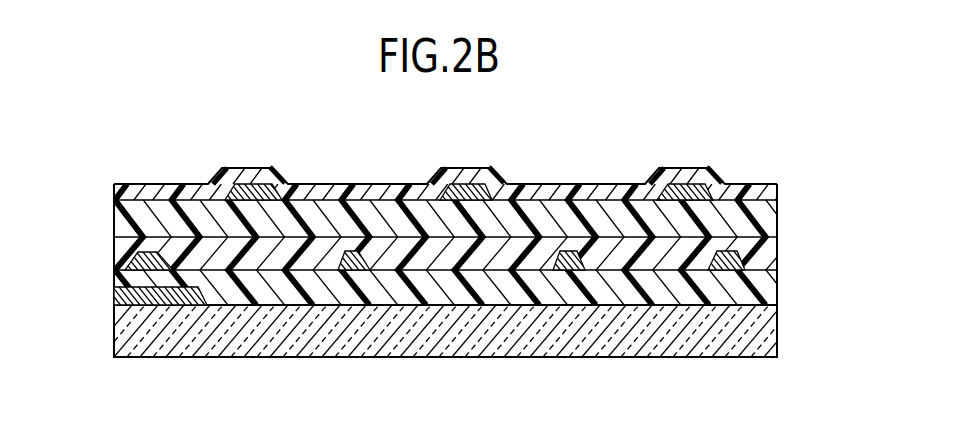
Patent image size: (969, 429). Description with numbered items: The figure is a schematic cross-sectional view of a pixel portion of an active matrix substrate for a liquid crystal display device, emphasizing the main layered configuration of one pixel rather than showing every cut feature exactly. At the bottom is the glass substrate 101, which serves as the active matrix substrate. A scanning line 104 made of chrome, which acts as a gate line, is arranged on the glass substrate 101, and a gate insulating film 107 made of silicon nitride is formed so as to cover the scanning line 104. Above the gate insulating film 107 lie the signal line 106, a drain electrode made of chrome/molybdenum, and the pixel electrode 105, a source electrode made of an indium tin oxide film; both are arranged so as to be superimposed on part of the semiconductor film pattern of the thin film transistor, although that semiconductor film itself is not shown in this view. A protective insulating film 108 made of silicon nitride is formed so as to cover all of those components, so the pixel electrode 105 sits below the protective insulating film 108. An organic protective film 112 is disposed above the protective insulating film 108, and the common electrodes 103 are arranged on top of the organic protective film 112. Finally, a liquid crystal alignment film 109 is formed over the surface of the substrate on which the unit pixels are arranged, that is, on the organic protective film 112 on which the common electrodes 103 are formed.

The glass substrate 101 is at (228, 343).
The common electrode 103 is at (678, 183).
The scanning line 104 is at (114, 308).
The pixel electrode 105 is at (572, 265).
The signal line 106 is at (114, 255).
The gate insulating film 107 is at (768, 292).
The protective insulating film 108 is at (657, 252).
The liquid crystal alignment film 109 is at (114, 198).
The organic protective film 112 is at (768, 218).